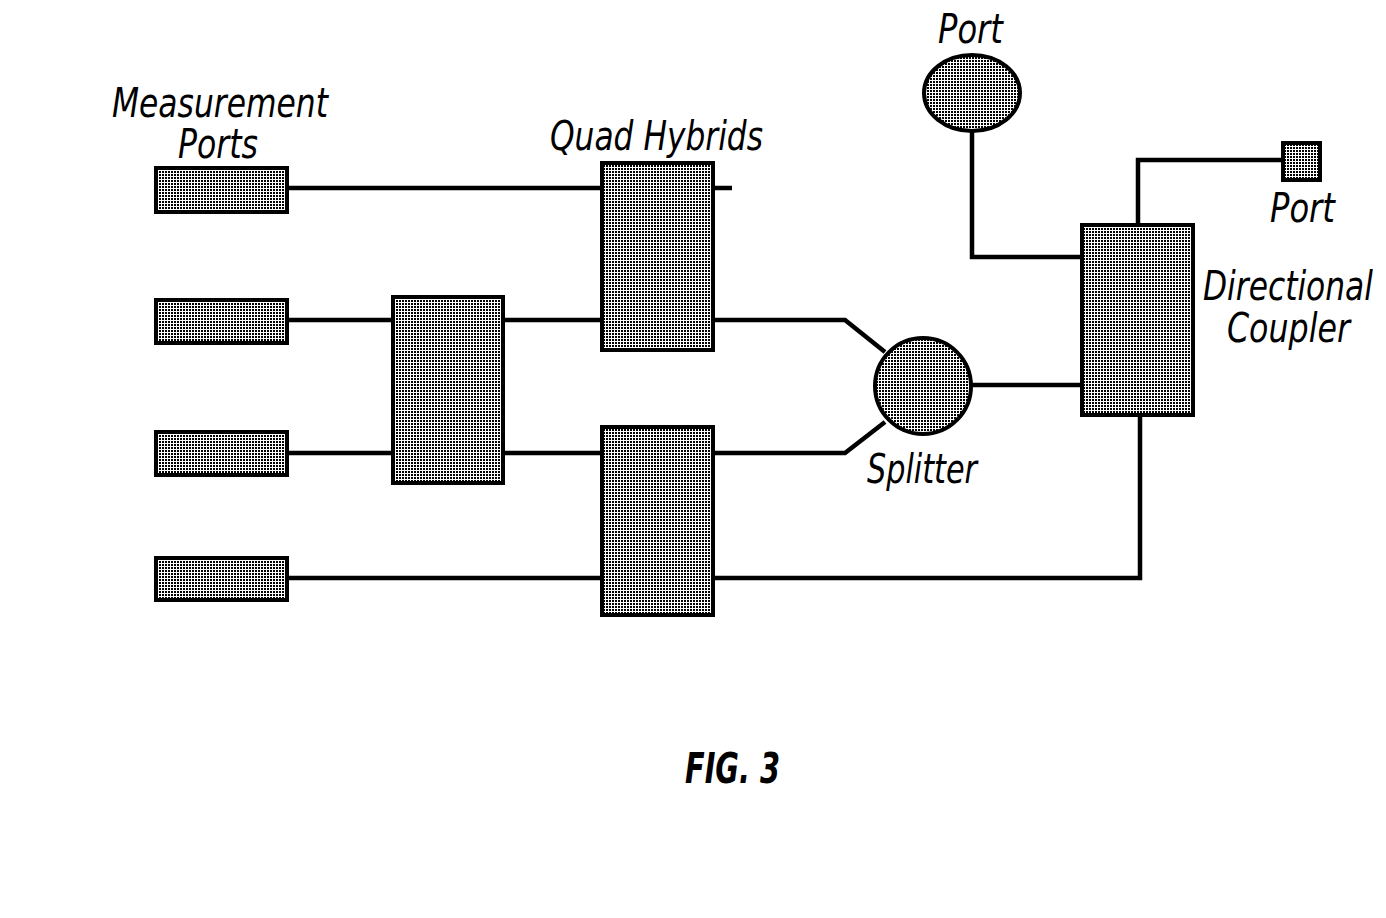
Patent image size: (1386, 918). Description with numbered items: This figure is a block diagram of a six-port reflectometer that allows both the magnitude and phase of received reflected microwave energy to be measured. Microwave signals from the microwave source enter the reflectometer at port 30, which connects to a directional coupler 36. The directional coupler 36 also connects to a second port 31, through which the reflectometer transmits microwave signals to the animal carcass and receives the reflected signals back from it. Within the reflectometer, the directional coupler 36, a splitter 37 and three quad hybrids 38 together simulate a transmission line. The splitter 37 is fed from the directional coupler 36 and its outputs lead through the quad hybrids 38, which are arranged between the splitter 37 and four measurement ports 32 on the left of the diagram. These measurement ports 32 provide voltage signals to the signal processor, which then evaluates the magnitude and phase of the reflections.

The port 30 is at (1020, 93).
The port 31 is at (1300, 143).
The measurement port 32 is at (156, 188).
The directional coupler 36 is at (1193, 362).
The splitter 37 is at (960, 418).
The quad hybrid 38 is at (602, 258).